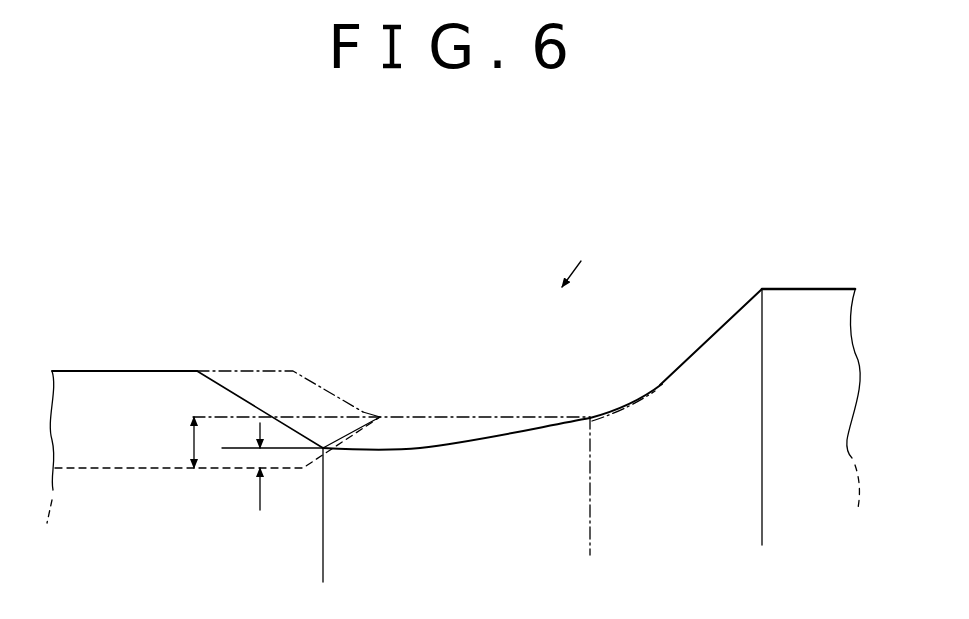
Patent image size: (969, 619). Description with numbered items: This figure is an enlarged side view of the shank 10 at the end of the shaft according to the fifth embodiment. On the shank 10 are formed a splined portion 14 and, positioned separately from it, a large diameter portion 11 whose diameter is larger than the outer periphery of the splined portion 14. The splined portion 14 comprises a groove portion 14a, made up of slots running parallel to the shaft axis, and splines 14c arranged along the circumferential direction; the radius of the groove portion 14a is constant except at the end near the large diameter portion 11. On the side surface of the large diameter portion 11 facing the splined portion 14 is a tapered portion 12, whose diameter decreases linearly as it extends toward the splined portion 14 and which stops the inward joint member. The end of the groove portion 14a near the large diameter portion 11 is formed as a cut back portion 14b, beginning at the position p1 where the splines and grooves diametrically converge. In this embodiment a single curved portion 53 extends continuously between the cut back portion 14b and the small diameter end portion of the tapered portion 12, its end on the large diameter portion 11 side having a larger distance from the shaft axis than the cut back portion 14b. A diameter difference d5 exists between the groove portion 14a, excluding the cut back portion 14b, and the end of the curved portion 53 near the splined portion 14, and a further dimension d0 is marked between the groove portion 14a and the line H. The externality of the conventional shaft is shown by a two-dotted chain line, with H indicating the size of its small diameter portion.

The shank 10 is at (633, 221).
The large diameter portion 11 is at (818, 290).
The tapered portion 12 is at (754, 287).
The splined portion 14 is at (82, 371).
The groove portion 14a is at (92, 468).
The cut back portion 14b is at (315, 422).
The splines 14c is at (143, 371).
The curved portion 53 is at (661, 387).
The position P1 p1 is at (323, 448).
The size of the small diameter portion of the conventional shaft H is at (467, 412).
The distance d0 is at (174, 442).
The diameter difference d5 is at (272, 467).